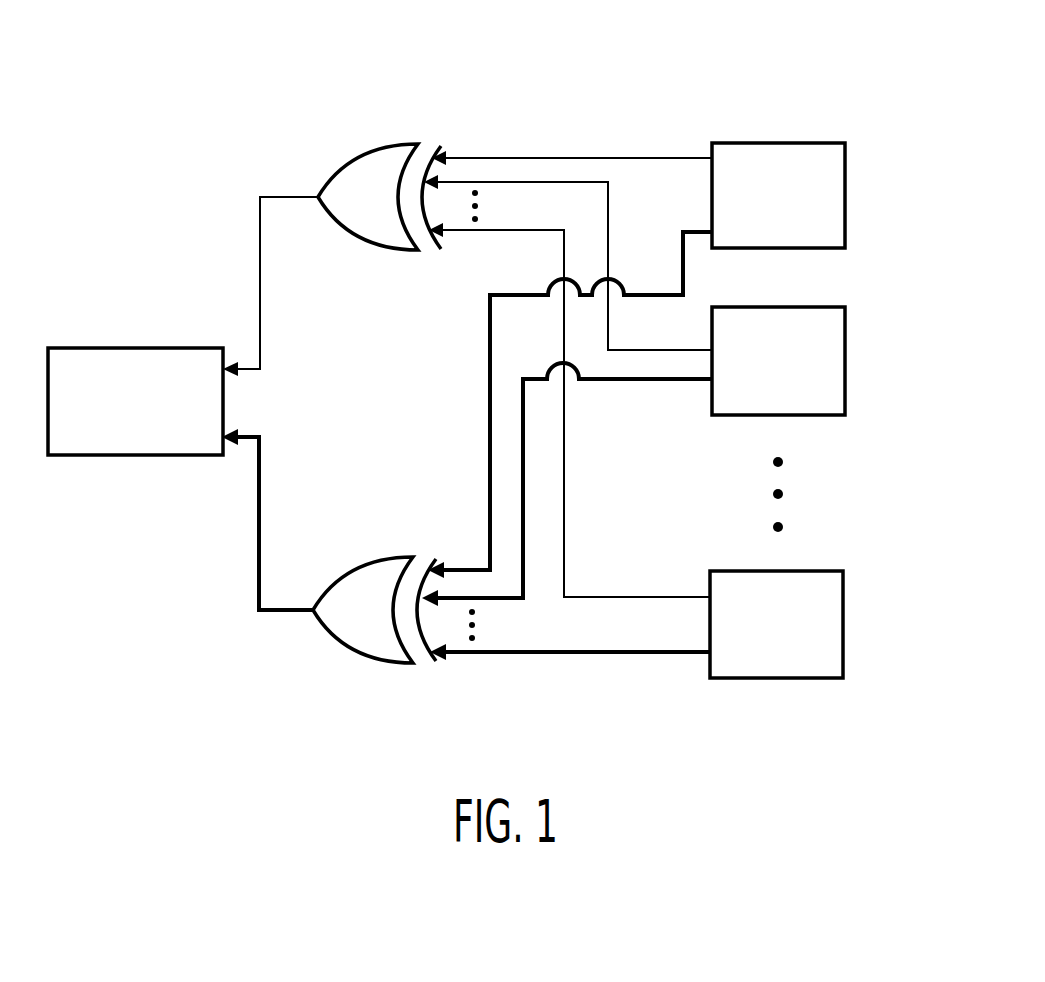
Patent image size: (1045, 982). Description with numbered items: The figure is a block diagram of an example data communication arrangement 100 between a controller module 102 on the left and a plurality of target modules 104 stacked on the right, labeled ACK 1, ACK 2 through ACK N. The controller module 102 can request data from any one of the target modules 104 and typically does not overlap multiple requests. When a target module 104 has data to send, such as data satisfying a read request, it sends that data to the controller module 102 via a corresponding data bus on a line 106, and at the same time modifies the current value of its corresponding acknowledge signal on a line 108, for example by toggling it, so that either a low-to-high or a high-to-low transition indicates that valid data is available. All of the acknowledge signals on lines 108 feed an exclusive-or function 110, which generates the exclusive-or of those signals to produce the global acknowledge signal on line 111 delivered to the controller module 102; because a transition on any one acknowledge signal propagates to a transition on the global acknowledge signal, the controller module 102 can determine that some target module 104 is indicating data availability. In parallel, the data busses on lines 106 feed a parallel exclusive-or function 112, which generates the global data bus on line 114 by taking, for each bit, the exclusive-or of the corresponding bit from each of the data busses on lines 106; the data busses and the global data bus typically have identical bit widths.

The data communication arrangement 100 is at (211, 62).
The controller module 102 is at (87, 348).
The target modules 104 is at (845, 178).
The data bus line 106 is at (470, 568).
The acknowledge signal line 108 is at (497, 152).
The exclusive-or function 110 is at (369, 146).
The global acknowledge signal line 111 is at (286, 203).
The parallel exclusive-or function 112 is at (372, 555).
The global data bus line 114 is at (280, 607).